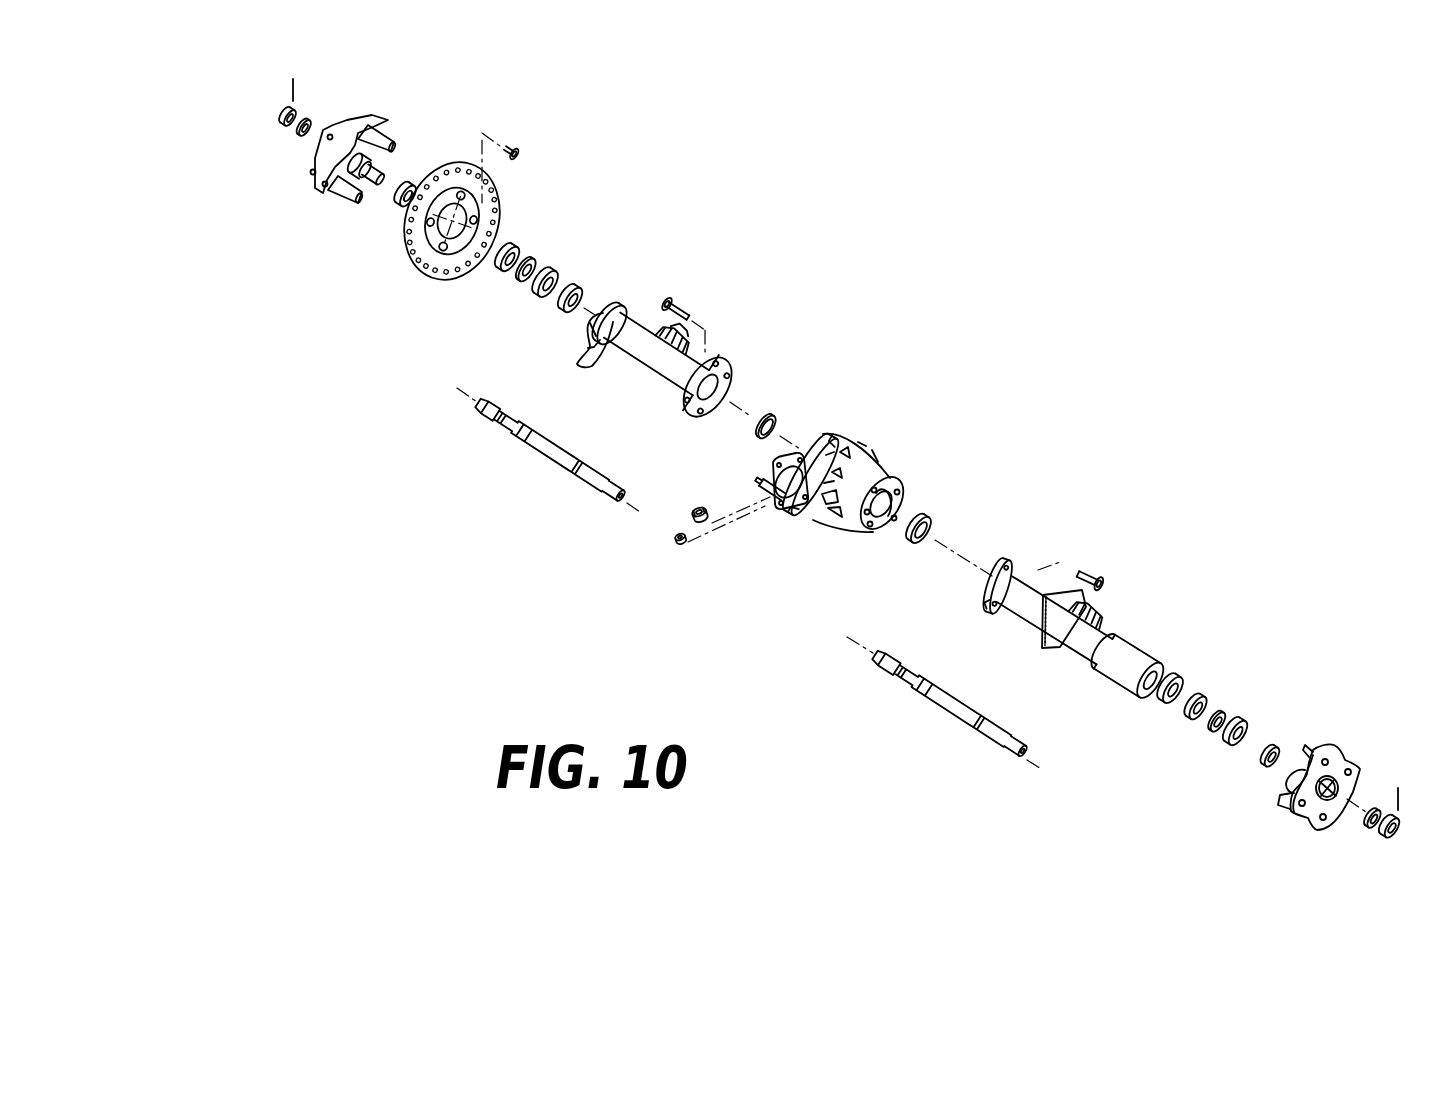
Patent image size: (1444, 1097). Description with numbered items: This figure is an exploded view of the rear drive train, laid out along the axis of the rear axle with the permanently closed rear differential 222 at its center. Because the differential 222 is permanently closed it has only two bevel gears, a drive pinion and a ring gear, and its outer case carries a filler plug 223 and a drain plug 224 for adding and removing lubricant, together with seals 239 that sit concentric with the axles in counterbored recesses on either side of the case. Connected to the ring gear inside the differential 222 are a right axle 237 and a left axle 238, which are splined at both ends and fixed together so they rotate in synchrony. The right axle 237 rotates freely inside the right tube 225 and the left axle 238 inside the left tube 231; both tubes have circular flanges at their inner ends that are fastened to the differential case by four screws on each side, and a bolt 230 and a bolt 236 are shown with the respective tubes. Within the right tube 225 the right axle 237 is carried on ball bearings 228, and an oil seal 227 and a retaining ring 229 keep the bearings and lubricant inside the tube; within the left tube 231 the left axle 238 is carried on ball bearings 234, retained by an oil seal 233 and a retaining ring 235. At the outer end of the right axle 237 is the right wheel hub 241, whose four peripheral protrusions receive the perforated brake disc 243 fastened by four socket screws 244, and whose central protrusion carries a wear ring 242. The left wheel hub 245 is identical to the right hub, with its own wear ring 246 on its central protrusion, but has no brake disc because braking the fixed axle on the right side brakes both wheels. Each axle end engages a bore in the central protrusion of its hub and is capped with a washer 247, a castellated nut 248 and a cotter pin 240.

The rear differential 222 is at (868, 447).
The filler plug 223 is at (690, 509).
The drain plug 224 is at (680, 542).
The right tube 225 is at (638, 324).
The oil seal 227 is at (511, 244).
The ball bearings 228 is at (553, 270).
The retaining ring 229 is at (523, 258).
The bolt 230 is at (670, 300).
The left tube 231 is at (1130, 647).
The oil seal 233 is at (1238, 720).
The ball bearings 234 is at (1178, 676).
The retaining ring 235 is at (1220, 712).
The bolt 236 is at (1090, 571).
The right axle 237 is at (533, 446).
The left axle 238 is at (938, 703).
The seals 239 is at (771, 417).
The cotter pin 240 is at (292, 88).
The right wheel hub 241 is at (385, 117).
The wear ring 242 is at (412, 185).
The perforated brake disc 243 is at (410, 258).
The socket screws 244 is at (510, 147).
The left wheel hub 245 is at (1338, 745).
The wear ring 246 is at (1272, 752).
The washer 247 is at (302, 138).
The castellated nut 248 is at (298, 110).